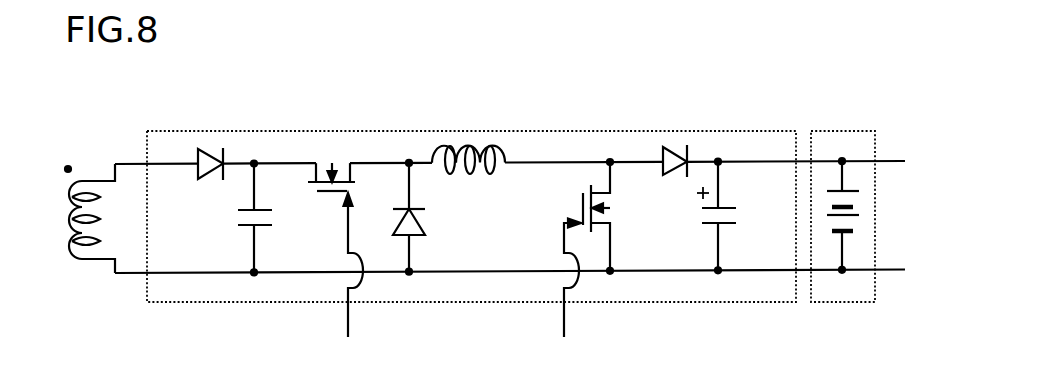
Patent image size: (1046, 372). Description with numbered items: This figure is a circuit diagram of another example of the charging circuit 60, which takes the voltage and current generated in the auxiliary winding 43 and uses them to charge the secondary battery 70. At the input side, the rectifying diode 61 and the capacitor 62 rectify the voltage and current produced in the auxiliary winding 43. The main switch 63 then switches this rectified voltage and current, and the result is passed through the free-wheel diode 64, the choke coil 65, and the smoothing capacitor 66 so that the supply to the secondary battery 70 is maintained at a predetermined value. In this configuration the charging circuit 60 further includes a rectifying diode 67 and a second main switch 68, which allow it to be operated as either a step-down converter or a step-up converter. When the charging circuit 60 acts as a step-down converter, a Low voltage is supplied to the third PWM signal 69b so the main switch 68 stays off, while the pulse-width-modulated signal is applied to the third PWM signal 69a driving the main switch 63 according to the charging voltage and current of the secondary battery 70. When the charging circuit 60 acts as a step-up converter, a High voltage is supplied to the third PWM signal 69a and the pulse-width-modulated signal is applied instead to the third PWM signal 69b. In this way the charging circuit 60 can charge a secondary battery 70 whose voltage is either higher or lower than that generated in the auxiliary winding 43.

The auxiliary winding 43 is at (97, 169).
The charging circuit 60 is at (548, 130).
The rectifying diode 61 is at (205, 180).
The capacitor 62 is at (236, 220).
The main switch 63 is at (335, 195).
The free-wheel diode 64 is at (423, 227).
The choke coil 65 is at (477, 178).
The smoothing capacitor 66 is at (728, 215).
The rectifying diode 67 is at (672, 176).
The main switch 68 is at (578, 207).
The third PWM signal 69a is at (346, 277).
The third PWM signal 69b is at (562, 291).
The secondary battery 70 is at (843, 128).